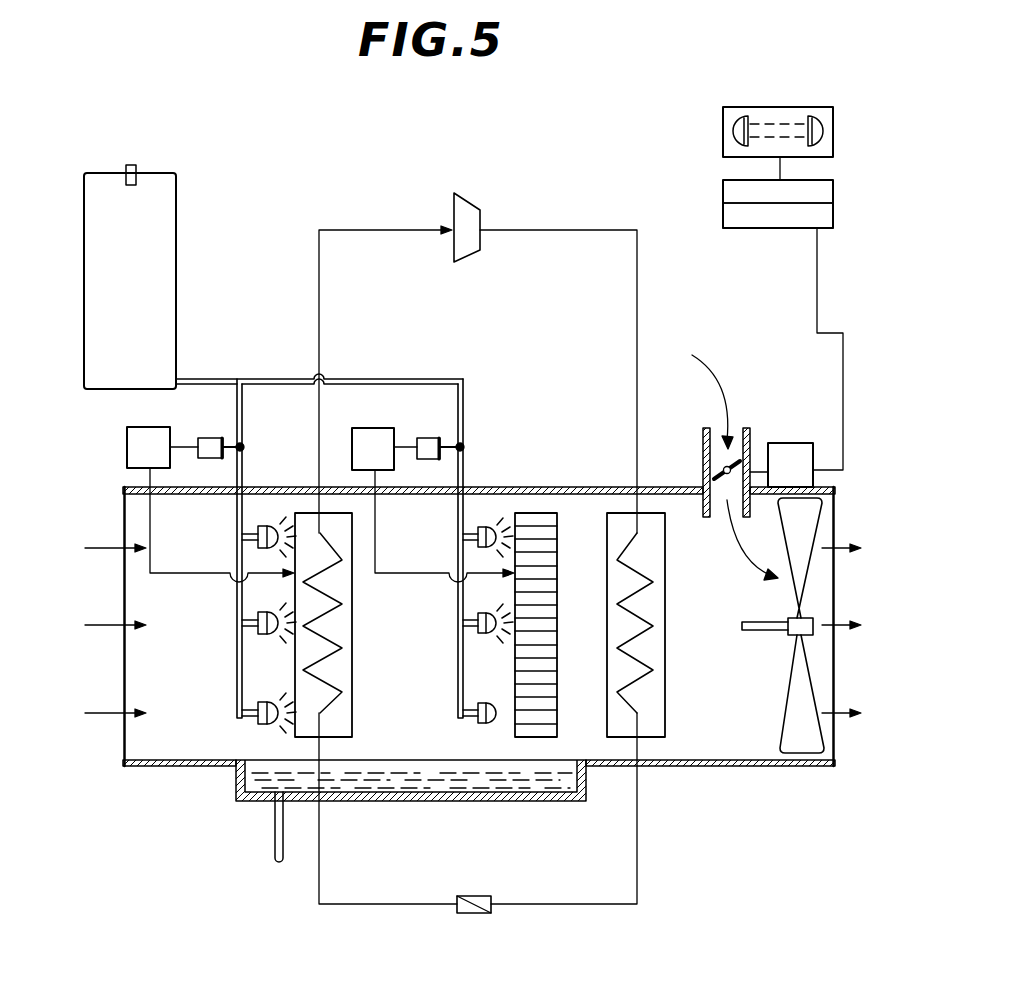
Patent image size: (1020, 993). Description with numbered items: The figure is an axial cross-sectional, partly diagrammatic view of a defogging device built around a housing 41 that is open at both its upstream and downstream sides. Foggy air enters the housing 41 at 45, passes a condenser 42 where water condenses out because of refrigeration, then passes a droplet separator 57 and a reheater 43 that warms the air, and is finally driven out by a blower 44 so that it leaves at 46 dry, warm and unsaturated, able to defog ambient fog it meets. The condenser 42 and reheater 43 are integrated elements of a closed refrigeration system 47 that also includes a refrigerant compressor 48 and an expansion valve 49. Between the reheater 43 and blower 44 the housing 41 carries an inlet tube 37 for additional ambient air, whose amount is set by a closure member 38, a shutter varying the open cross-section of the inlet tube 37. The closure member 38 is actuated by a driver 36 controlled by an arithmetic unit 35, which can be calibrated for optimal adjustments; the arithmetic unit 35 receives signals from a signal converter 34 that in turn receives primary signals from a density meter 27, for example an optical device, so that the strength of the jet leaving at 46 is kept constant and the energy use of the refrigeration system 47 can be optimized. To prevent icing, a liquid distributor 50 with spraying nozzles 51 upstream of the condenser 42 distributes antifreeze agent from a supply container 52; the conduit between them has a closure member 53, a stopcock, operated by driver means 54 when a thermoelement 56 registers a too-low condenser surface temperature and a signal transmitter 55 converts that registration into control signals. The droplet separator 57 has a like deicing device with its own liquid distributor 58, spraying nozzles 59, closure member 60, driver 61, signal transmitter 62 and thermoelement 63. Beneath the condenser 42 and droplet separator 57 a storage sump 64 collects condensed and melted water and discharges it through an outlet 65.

The density meter 27 is at (735, 105).
The signal converter 34 is at (723, 187).
The arithmetic unit 35 is at (740, 222).
The driver 36 is at (812, 418).
The inlet tube 37 is at (704, 443).
The closure member 38 is at (718, 473).
The housing 41 is at (722, 767).
The condenser 42 is at (355, 651).
The reheater 43 is at (666, 638).
The blower 44 is at (788, 697).
The foggy air inlet 45 is at (106, 728).
The dry air outlet 46 is at (855, 740).
The closed refrigeration system 47 is at (597, 199).
The refrigerant compressor 48 is at (470, 202).
The expansion valve 49 is at (466, 914).
The liquid distributor 50 is at (236, 661).
The spraying nozzles 51 is at (272, 525).
The supply container 52 is at (168, 261).
The closure member 53 is at (282, 420).
The driver means 54 is at (223, 418).
The signal transmitter 55 is at (127, 453).
The thermoelement 56 is at (284, 577).
The droplet separator 57 is at (557, 630).
The liquid distributor 58 is at (456, 660).
The spraying nozzles 59 is at (497, 508).
The closure member 60 is at (466, 448).
The driver 61 is at (428, 437).
The signal transmitter 62 is at (394, 406).
The thermoelement 63 is at (506, 578).
The storage sump 64 is at (490, 800).
The outlet 65 is at (275, 838).